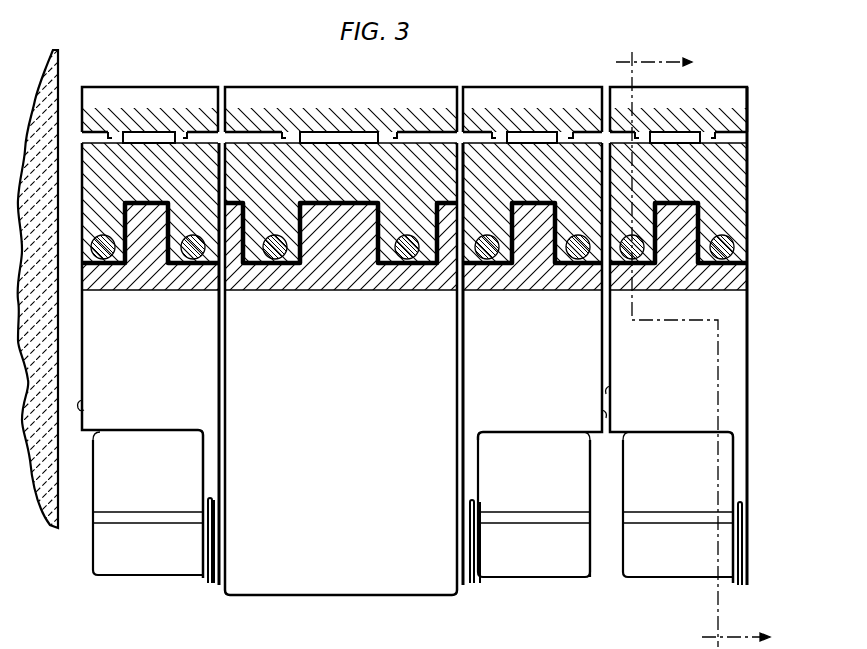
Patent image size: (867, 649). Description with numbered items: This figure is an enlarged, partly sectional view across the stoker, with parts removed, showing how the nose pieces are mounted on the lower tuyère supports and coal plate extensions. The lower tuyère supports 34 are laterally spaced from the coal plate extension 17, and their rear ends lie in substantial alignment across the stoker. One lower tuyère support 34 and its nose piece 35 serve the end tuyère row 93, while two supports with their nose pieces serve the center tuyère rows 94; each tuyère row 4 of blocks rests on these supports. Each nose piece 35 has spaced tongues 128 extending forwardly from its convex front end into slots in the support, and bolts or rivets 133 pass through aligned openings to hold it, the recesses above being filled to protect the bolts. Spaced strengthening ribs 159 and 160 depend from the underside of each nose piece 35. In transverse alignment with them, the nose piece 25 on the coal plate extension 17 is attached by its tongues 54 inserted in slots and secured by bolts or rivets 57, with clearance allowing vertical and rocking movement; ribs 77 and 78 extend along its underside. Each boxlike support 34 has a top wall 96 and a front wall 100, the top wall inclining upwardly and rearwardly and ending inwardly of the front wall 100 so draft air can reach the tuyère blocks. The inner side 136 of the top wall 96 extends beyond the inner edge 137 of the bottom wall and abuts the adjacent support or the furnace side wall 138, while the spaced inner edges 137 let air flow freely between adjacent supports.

The tuyère row 4 is at (685, 349).
The coal plate extension 17 is at (341, 369).
The nose piece 25 is at (340, 118).
The lower tuyère support 34 is at (414, 336).
The nose piece 35 is at (157, 120).
The tongue 54 is at (298, 265).
The bolt or rivet 57 is at (275, 260).
The rib 77 is at (284, 137).
The rib 78 is at (388, 137).
The end tuyère row 93 is at (165, 562).
The center tuyère row 94 is at (610, 560).
The top wall 96 is at (200, 342).
The front wall 100 is at (183, 518).
The tongue 128 is at (97, 258).
The bolt or rivet 133 is at (120, 263).
The inner side of top wall 136 is at (82, 404).
The inner edge of bottom wall 137 is at (94, 448).
The side wall of furnace 138 is at (50, 70).
The strengthening rib 159 is at (110, 137).
The strengthening rib 160 is at (185, 138).